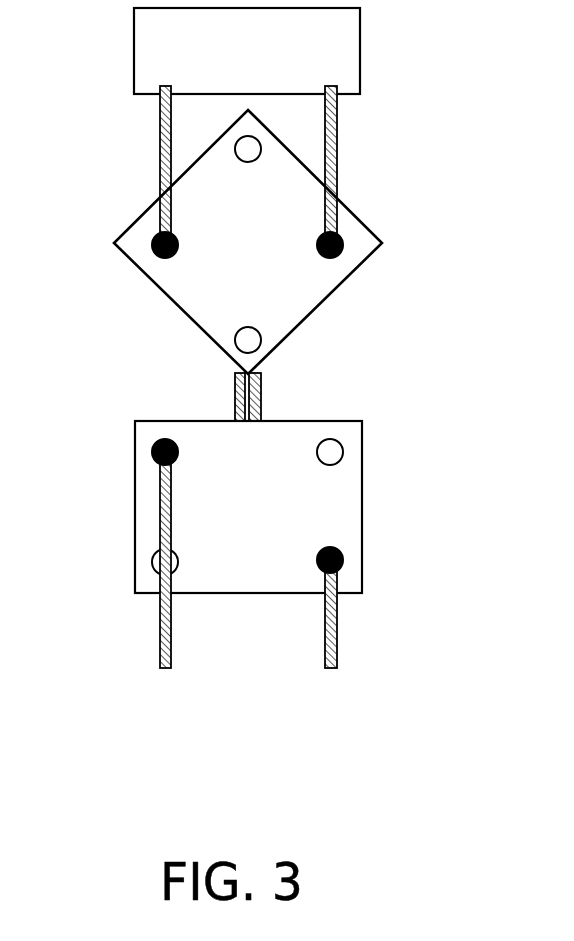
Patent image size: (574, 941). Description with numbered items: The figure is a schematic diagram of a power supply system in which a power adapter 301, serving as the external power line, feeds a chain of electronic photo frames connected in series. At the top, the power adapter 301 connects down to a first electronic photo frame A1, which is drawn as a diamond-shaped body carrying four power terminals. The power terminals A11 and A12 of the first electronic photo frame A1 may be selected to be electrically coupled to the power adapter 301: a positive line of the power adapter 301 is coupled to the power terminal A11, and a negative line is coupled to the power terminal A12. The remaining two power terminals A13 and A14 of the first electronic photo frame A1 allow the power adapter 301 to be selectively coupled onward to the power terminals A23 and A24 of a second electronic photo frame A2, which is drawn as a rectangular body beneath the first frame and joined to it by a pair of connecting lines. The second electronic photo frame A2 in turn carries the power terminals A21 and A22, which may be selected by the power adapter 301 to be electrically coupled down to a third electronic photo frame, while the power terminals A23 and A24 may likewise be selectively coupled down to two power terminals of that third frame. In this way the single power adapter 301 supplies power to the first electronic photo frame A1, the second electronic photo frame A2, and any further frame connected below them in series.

The power adapter 301 is at (362, 47).
The first electronic photo frame A1 is at (293, 153).
The power terminal A11 is at (346, 232).
The power terminal A12 is at (138, 242).
The power terminal A13 is at (252, 143).
The power terminal A14 is at (236, 336).
The second electronic photo frame A2 is at (356, 408).
The power terminal A21 is at (350, 546).
The power terminal A22 is at (140, 452).
The power terminal A23 is at (333, 452).
The power terminal A24 is at (153, 562).